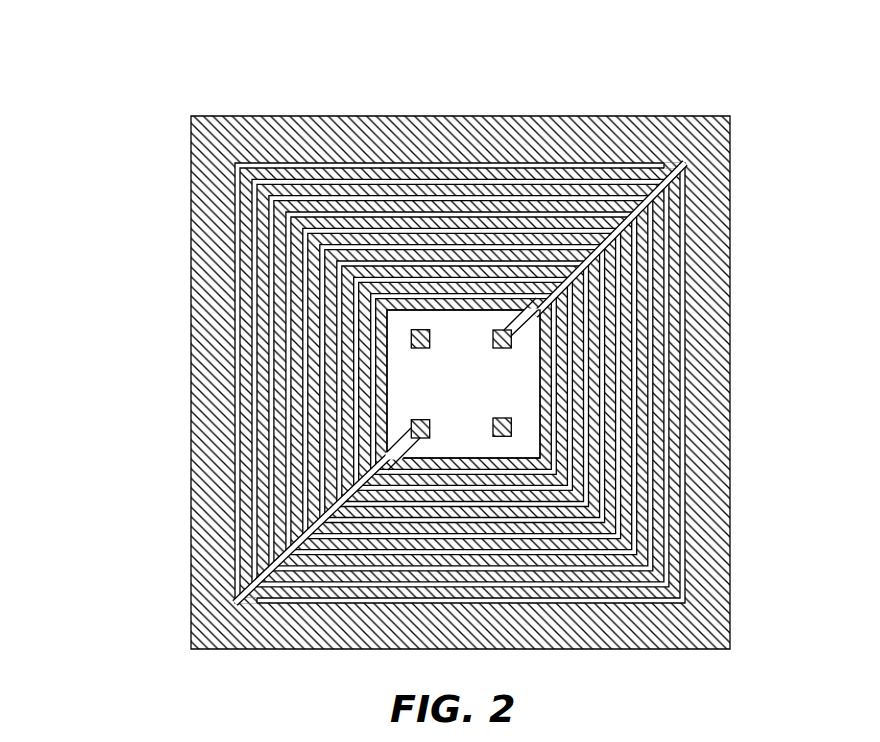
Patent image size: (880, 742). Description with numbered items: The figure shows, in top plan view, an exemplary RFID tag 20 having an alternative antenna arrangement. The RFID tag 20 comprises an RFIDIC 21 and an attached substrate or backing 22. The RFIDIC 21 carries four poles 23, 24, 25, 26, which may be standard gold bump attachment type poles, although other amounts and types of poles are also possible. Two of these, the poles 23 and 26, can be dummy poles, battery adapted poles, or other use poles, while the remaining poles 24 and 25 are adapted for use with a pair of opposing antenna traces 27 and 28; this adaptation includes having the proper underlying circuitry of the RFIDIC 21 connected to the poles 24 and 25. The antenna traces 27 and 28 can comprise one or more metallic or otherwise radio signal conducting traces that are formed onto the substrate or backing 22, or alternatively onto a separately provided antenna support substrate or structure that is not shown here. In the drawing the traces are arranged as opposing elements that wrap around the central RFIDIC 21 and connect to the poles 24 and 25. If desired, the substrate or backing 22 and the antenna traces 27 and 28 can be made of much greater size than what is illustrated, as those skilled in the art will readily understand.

The RFID tag 20 is at (137, 95).
The RFIDIC 21 is at (477, 406).
The substrate or backing 22 is at (183, 241).
The pole 23 is at (422, 331).
The pole 24 is at (415, 412).
The pole 25 is at (485, 328).
The pole 26 is at (493, 410).
The antenna trace 27 is at (680, 214).
The antenna trace 28 is at (227, 510).